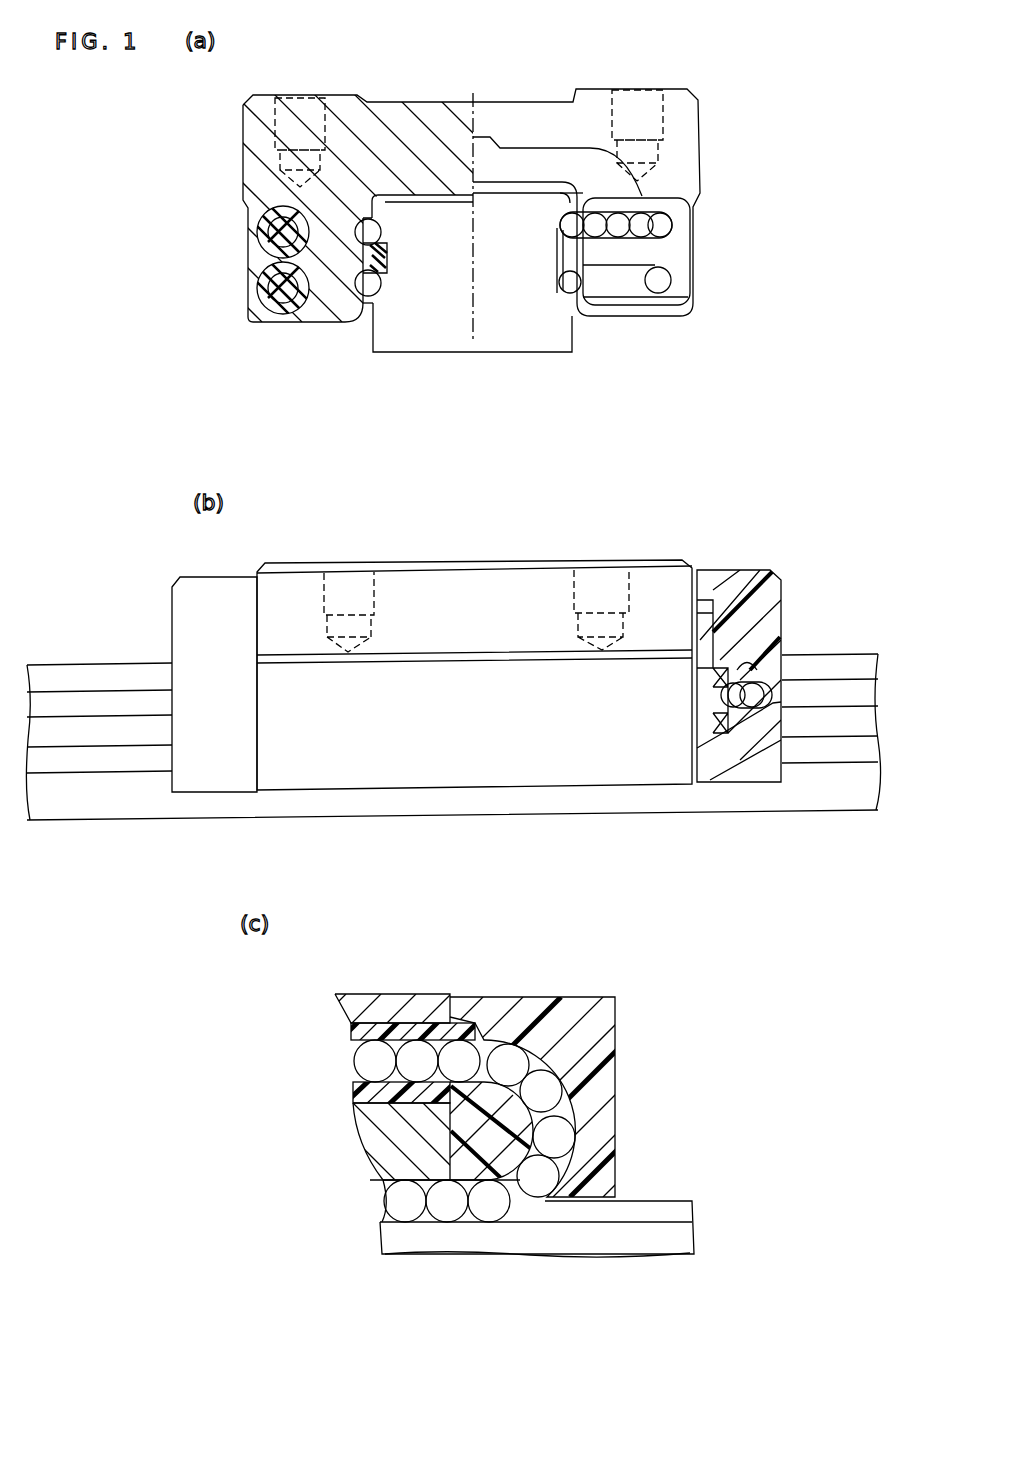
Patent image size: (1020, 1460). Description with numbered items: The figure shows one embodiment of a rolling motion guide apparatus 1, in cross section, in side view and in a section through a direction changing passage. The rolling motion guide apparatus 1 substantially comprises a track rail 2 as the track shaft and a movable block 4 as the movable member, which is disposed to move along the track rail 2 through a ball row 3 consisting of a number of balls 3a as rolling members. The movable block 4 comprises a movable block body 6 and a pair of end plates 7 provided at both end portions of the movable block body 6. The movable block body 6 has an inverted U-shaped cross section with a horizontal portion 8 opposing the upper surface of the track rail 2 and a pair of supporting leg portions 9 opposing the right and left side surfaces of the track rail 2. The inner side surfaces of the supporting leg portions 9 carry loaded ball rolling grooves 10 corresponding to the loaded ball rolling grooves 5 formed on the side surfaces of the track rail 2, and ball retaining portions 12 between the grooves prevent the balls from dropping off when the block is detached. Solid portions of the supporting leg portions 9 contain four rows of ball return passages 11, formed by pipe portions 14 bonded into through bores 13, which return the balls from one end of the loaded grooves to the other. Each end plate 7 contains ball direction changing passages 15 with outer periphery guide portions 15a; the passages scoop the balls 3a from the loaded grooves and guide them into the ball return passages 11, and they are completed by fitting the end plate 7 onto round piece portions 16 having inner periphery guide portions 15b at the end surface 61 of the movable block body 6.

The rolling motion guide apparatus 1 is at (665, 75).
The track rail 2 is at (510, 333).
The ball row 3 is at (270, 213).
The balls 3a is at (668, 200).
The movable block 4 is at (453, 97).
The loaded ball rolling grooves 5 is at (387, 223).
The movable block body 6 is at (417, 123).
The end plates 7 is at (190, 607).
The horizontal portion 8 is at (512, 117).
The supporting leg portions 9 is at (240, 140).
The loaded ball rolling grooves 10 is at (360, 233).
The ball return passages 11 is at (273, 233).
The ball retaining portions 12 is at (393, 273).
The through bores 13 is at (270, 252).
The pipe portions 14 is at (260, 223).
The ball direction changing passages 15 is at (667, 273).
The outer periphery guide portions 15a is at (573, 1128).
The inner guide portion 15b is at (625, 268).
The round piece portions 16 is at (617, 200).
The end surface 61 is at (562, 122).